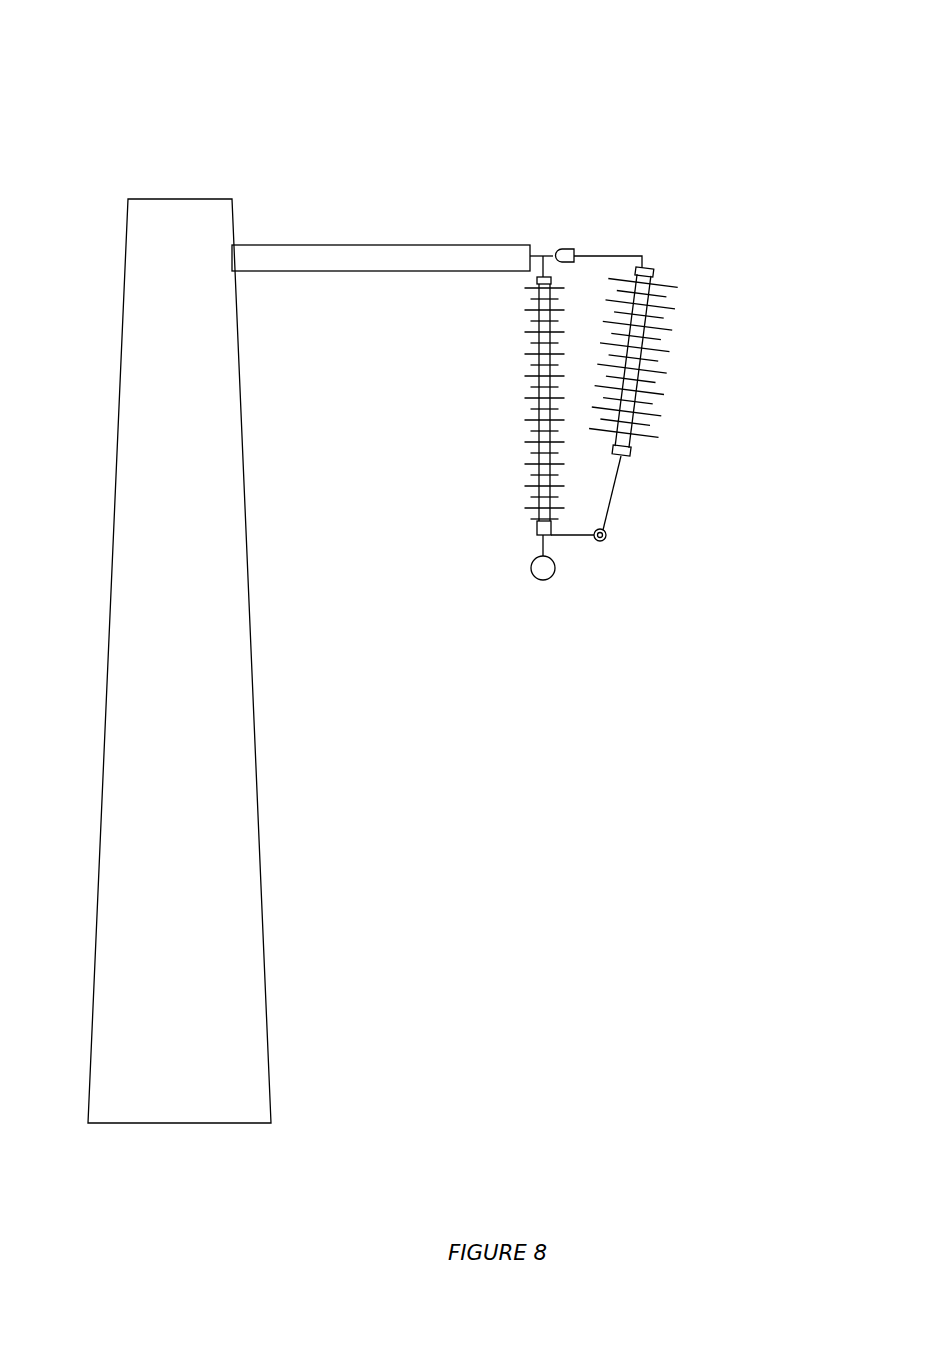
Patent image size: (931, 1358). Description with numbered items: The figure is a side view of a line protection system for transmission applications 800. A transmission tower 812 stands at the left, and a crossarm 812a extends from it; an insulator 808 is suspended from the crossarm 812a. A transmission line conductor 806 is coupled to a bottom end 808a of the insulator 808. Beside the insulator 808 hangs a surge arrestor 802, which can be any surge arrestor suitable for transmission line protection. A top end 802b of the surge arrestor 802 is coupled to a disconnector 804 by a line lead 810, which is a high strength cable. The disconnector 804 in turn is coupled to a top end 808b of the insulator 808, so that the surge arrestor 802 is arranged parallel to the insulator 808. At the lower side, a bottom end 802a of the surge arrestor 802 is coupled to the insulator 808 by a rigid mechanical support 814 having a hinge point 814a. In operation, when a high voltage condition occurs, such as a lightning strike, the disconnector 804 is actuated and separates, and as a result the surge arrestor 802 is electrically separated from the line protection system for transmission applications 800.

The line protection system for transmission applications 800 is at (145, 74).
The surge arrestor 802 is at (697, 350).
The bottom end of the surge arrestor 802a is at (631, 455).
The top end of the surge arrestor 802b is at (653, 270).
The disconnector 804 is at (563, 242).
The transmission line conductor 806 is at (536, 587).
The insulator 808 is at (490, 404).
The bottom end of the insulator 808a is at (537, 531).
The top end of the insulator 808b is at (535, 281).
The line lead 810 is at (614, 245).
The transmission tower 812 is at (238, 650).
The crossarm 812a is at (377, 257).
The rigid mechanical support 814 is at (630, 505).
The hinge point 814a is at (604, 540).